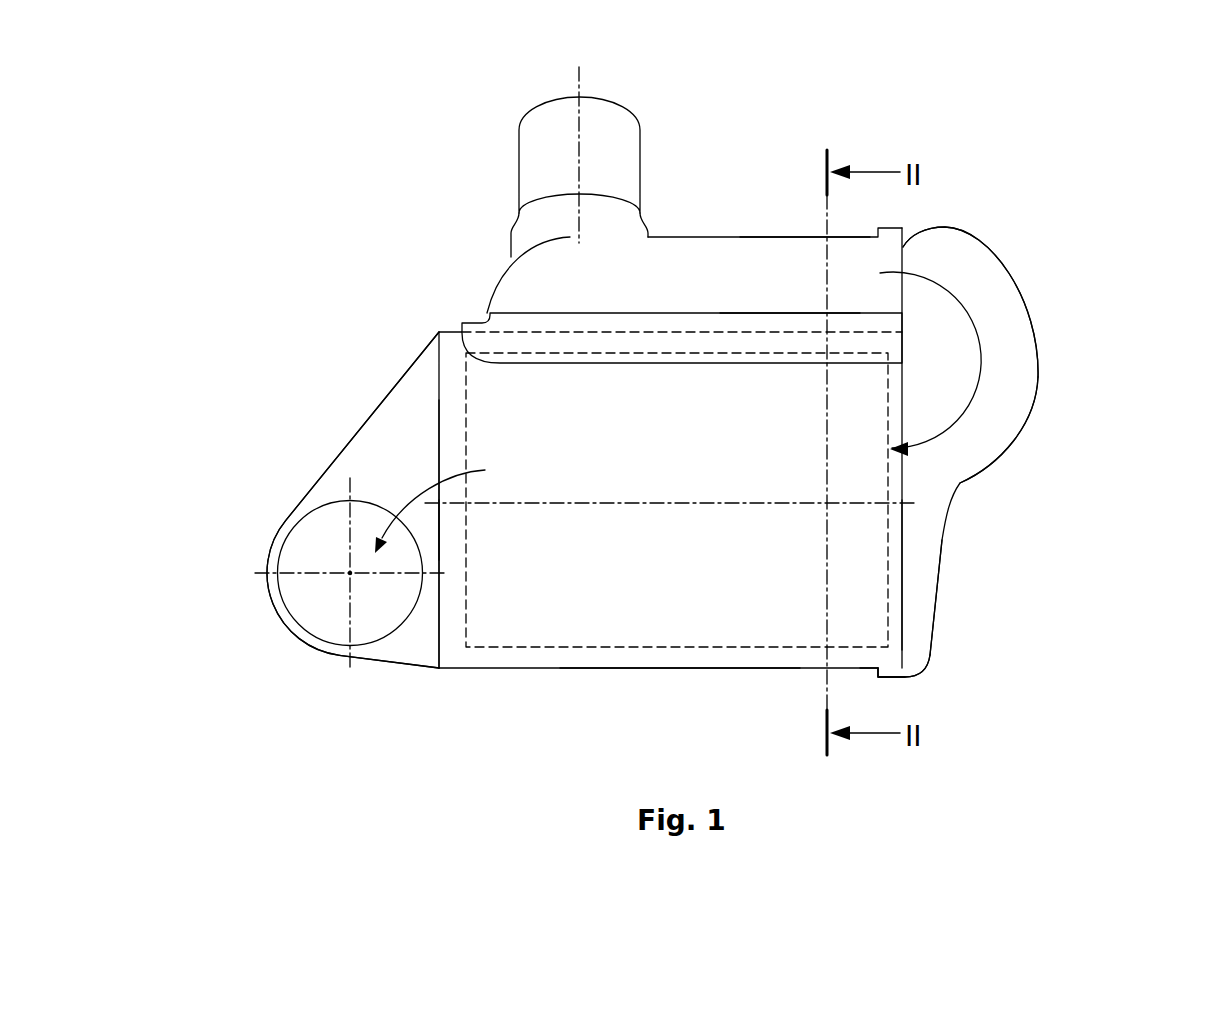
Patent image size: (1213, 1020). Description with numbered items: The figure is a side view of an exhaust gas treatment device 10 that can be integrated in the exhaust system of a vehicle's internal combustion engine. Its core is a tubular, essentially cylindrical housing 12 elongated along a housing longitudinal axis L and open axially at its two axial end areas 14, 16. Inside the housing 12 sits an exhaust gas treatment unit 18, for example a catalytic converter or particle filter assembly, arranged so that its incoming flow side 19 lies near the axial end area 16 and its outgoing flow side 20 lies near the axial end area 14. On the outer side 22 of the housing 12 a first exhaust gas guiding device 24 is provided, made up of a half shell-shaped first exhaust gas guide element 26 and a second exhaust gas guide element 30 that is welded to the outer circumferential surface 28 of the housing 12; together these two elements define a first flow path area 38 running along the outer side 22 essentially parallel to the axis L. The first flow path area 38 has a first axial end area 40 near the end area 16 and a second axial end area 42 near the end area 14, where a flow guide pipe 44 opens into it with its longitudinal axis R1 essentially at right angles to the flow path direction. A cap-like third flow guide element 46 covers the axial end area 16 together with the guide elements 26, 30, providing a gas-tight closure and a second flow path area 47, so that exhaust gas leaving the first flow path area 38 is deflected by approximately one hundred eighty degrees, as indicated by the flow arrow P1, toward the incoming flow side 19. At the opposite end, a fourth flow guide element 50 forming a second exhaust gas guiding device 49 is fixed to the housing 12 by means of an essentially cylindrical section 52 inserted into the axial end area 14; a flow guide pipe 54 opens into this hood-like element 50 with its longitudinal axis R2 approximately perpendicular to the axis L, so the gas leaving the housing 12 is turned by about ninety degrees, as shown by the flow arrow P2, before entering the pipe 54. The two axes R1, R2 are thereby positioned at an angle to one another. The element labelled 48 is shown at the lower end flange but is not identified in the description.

The exhaust gas treatment device 10 is at (1098, 146).
The housing 12 is at (612, 670).
The axial end area 14 is at (452, 670).
The axial end area 16 is at (888, 668).
The exhaust gas treatment unit 18 is at (768, 615).
The incoming flow side 19 is at (890, 545).
The outgoing flow side 20 is at (463, 392).
The outer side 22 is at (452, 303).
The first exhaust gas guiding device 24 is at (745, 168).
The first exhaust gas guide element 26 is at (674, 237).
The outer circumferential surface 28 is at (683, 670).
The second exhaust gas guide element 30 is at (882, 325).
The first flow path area 38 is at (756, 249).
The first axial end area 40 is at (892, 260).
The second axial end area 42 is at (533, 273).
The flow guide pipe 44 is at (518, 127).
The third flow guide element 46 is at (1038, 342).
The second flow path area 47 is at (1020, 380).
The bottom flange 48 is at (909, 677).
The second exhaust gas guiding device 49 is at (220, 365).
The fourth flow guide element 50 is at (333, 452).
The cylindrical section 52 is at (430, 670).
The flow guide pipe 54 is at (297, 519).
The housing longitudinal axis L is at (915, 504).
The flow arrow P1 is at (977, 402).
The flow arrow P2 is at (415, 490).
The longitudinal axis R1 is at (580, 90).
The longitudinal axis R2 is at (350, 573).